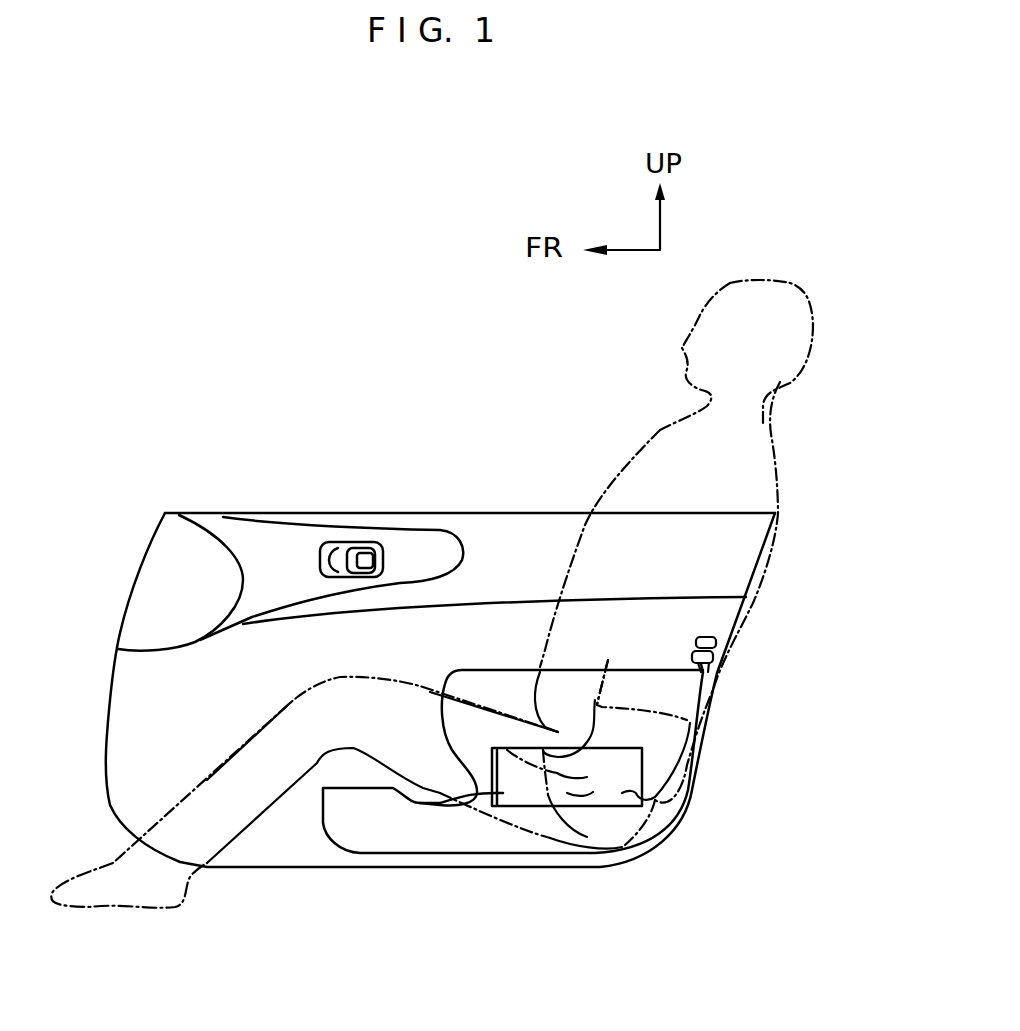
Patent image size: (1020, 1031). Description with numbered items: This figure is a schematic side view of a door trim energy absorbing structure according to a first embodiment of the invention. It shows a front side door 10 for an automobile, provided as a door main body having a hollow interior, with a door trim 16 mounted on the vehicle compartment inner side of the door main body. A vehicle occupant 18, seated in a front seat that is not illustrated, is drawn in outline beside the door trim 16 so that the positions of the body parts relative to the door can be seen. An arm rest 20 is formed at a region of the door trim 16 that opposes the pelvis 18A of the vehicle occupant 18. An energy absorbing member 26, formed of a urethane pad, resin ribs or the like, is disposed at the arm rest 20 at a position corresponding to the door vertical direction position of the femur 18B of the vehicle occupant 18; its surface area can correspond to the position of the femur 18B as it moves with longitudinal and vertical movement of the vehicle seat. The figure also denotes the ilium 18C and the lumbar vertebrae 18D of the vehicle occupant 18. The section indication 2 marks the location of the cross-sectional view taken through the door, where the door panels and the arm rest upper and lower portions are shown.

The front side door 10 is at (163, 486).
The door trim 16 is at (445, 530).
The vehicle occupant 18 is at (660, 430).
The pelvis 18A is at (655, 800).
The femur 18B is at (497, 797).
The ilium 18C is at (608, 670).
The lumbar vertebrae 18D is at (709, 660).
The arm rest 20 is at (506, 665).
The energy absorbing member 26 is at (583, 803).
The section line for FIG. 2 is at (532, 500).